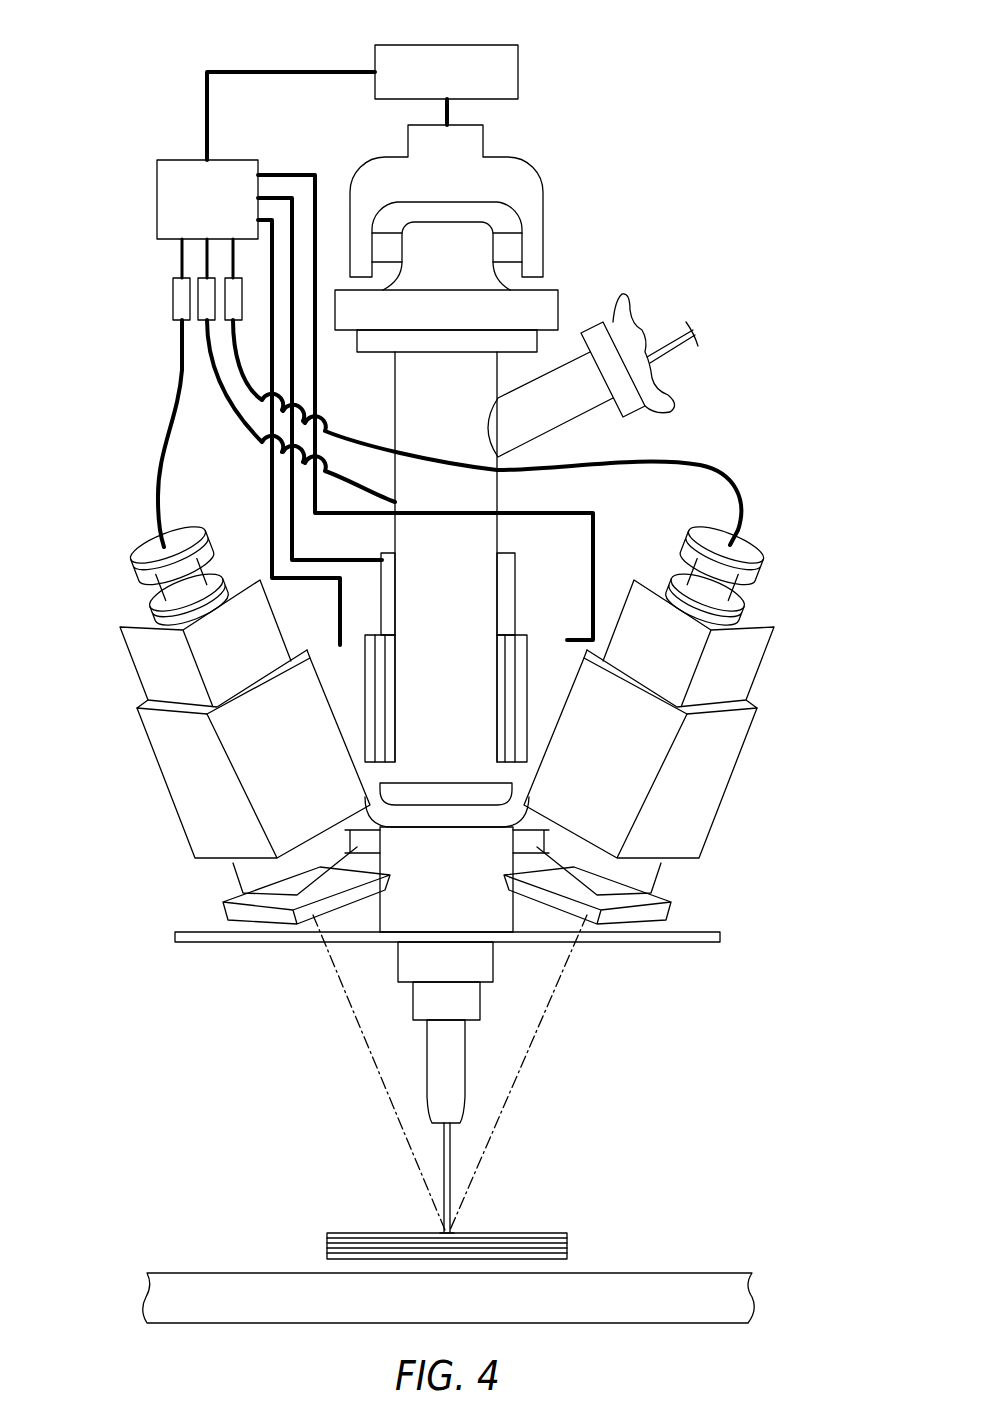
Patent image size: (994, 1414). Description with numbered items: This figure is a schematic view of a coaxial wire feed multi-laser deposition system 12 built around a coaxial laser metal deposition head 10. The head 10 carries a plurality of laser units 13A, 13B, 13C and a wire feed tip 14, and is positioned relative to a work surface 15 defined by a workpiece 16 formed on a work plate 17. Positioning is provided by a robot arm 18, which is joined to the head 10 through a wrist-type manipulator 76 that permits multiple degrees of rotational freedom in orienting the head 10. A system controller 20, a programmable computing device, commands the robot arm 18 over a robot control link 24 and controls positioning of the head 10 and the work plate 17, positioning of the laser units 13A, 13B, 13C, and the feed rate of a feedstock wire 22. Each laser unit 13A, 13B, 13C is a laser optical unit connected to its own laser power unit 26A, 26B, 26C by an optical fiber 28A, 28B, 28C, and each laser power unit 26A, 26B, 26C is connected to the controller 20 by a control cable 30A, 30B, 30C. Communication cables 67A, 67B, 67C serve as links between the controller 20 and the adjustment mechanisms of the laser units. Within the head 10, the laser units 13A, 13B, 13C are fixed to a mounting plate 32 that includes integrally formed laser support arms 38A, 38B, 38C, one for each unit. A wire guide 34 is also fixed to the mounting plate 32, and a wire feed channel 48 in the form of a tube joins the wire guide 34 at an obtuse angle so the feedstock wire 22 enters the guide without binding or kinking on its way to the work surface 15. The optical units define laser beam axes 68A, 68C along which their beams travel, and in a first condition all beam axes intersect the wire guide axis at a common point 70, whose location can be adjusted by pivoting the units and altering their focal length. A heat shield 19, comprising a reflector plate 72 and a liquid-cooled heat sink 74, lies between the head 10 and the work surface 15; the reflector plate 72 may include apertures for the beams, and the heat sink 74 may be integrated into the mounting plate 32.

The coaxial laser metal deposition head 10 is at (155, 790).
The coaxial wire feed multi-laser deposition system 12 is at (690, 160).
The laser unit 13A is at (752, 735).
The laser unit 13B is at (514, 560).
The laser unit 13C is at (132, 668).
The wire feed tip 14 is at (467, 1073).
The work surface 15 is at (520, 1233).
The workpiece 16 is at (567, 1250).
The work plate 17 is at (700, 1273).
The robot arm 18 is at (519, 55).
The heat shield 19 is at (187, 931).
The system controller 20 is at (213, 200).
The feedstock wire 22 is at (672, 352).
The robot control link 24 is at (277, 70).
The laser power unit 26A is at (228, 328).
The laser power unit 26B is at (202, 325).
The laser power unit 26C is at (173, 305).
The optical fiber 28A is at (742, 508).
The optical fiber 28B is at (225, 410).
The optical fiber 28C is at (158, 480).
The control cable 30A is at (232, 270).
The control cable 30B is at (206, 258).
The control cable 30C is at (181, 247).
The mounting plate 32 is at (453, 830).
The wire guide 34 is at (499, 483).
The laser support arm 38A is at (607, 647).
The laser support arm 38B is at (528, 650).
The laser support arm 38C is at (312, 642).
The wire feed channel 48 is at (560, 425).
The communication cable 67A is at (273, 175).
The communication cable 67B is at (283, 197).
The communication cable 67C is at (275, 228).
The laser beam axis 68A is at (528, 1035).
The laser beam axis 68C is at (362, 1037).
The common point 70 is at (443, 1230).
The reflector plate 72 is at (178, 943).
The heat sink 74 is at (516, 912).
The wrist-type manipulator 76 is at (518, 160).